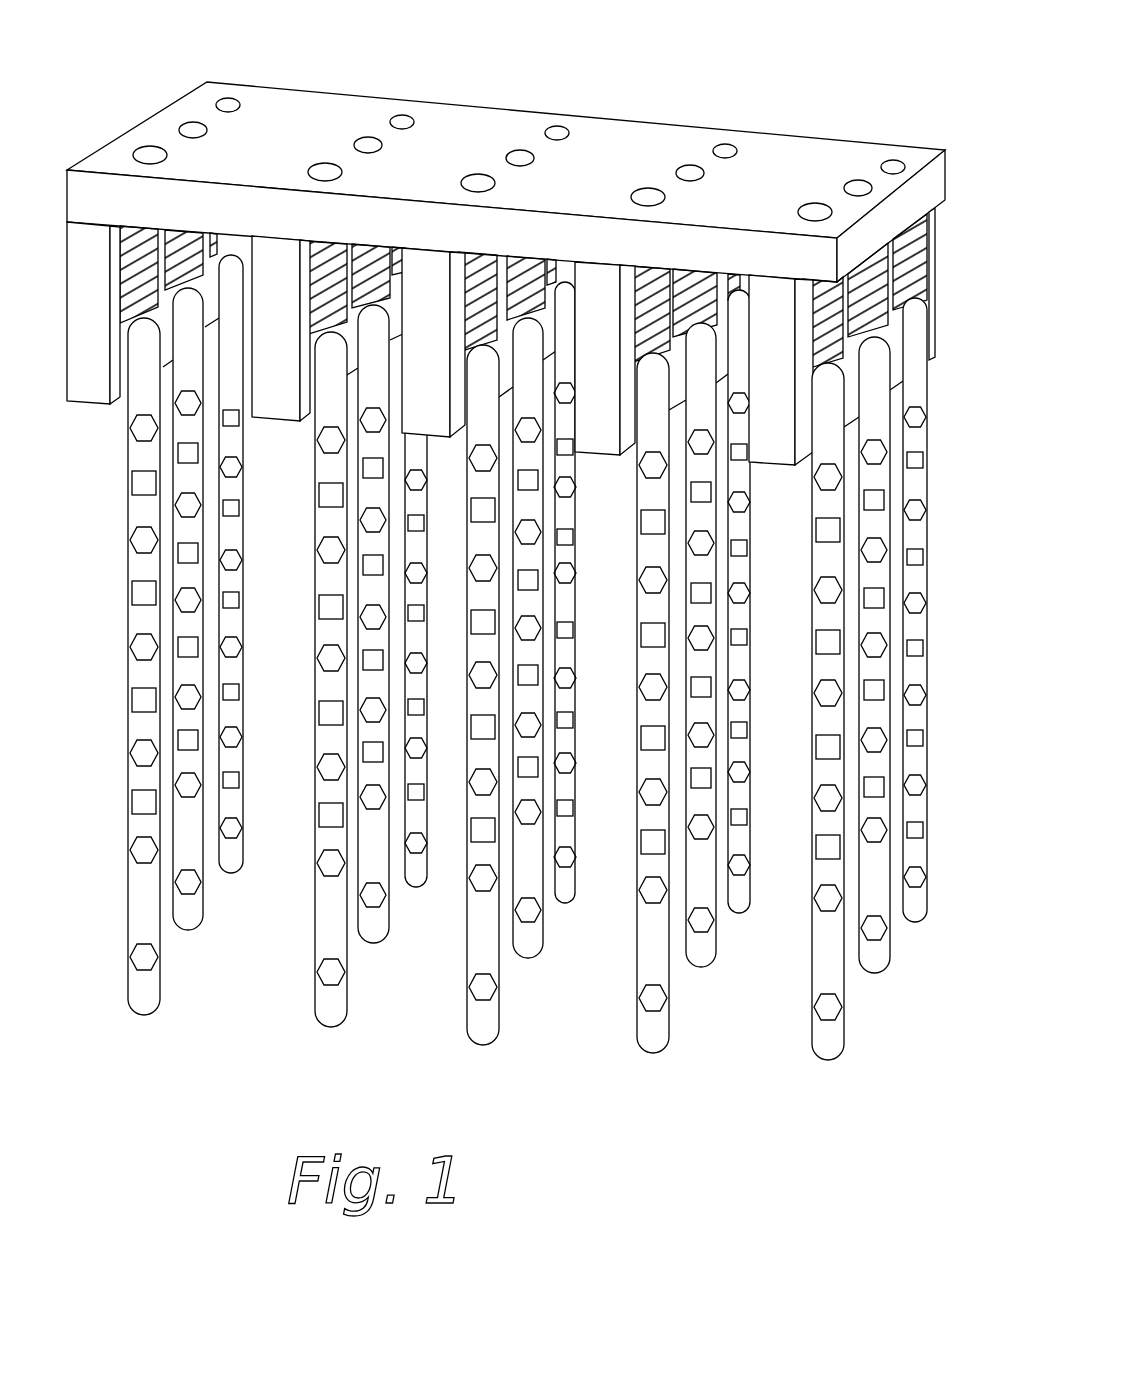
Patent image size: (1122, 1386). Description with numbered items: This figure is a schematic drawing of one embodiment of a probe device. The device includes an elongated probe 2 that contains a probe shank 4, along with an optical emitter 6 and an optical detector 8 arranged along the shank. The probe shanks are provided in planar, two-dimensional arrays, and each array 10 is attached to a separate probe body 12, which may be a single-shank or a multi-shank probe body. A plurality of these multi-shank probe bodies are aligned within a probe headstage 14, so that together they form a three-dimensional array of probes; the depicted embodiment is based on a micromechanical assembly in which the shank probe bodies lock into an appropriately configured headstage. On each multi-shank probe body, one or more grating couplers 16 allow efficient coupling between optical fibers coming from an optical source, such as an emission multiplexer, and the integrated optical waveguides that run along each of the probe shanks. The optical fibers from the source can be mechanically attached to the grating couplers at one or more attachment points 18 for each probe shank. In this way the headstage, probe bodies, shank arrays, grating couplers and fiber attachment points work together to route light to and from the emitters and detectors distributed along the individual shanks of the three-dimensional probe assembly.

The elongated probe 2 is at (514, 603).
The probe shank 4 is at (128, 514).
The optical emitter 6 is at (128, 544).
The optical detector 8 is at (128, 798).
The array 10 is at (823, 1078).
The probe body 12 is at (785, 467).
The probe headstage 14 is at (946, 150).
The grating coupler 16 is at (925, 240).
The attachment point 18 is at (411, 120).